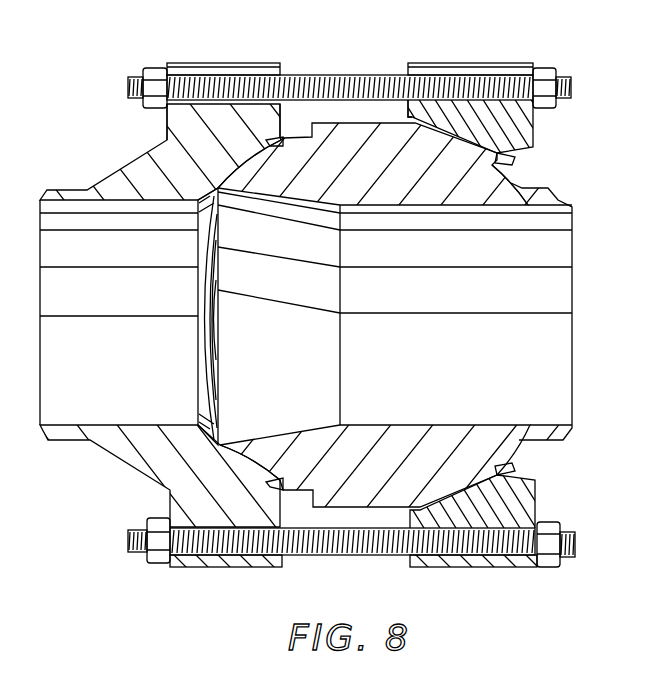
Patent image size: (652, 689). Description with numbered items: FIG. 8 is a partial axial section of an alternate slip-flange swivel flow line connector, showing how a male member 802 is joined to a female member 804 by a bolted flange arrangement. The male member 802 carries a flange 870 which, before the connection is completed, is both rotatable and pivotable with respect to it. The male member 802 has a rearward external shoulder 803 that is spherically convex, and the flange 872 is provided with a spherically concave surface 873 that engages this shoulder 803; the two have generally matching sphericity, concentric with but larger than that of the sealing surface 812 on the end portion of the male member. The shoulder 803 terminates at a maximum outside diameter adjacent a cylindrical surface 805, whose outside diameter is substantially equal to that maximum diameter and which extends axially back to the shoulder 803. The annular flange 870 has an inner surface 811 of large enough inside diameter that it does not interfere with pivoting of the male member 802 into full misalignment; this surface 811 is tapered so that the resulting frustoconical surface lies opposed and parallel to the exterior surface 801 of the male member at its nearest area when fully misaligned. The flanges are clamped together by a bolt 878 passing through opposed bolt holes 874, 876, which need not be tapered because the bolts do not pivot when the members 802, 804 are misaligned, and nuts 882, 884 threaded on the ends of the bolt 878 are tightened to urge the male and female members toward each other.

The exterior surface 801 is at (543, 190).
The male member 802 is at (558, 258).
The rearward external shoulder 803 is at (510, 180).
The female member 804 is at (113, 183).
The cylindrical surface 805 is at (339, 117).
The inner surface 811 is at (518, 163).
The sealing surface 812 is at (293, 137).
The flange 870 is at (520, 133).
The flange 872 is at (182, 133).
The spherically concave surface 873 is at (413, 110).
The bolt hole 874 is at (408, 80).
The bolt hole 876 is at (228, 80).
The bolt 878 is at (313, 80).
The nut 882 is at (547, 72).
The nut 884 is at (154, 70).